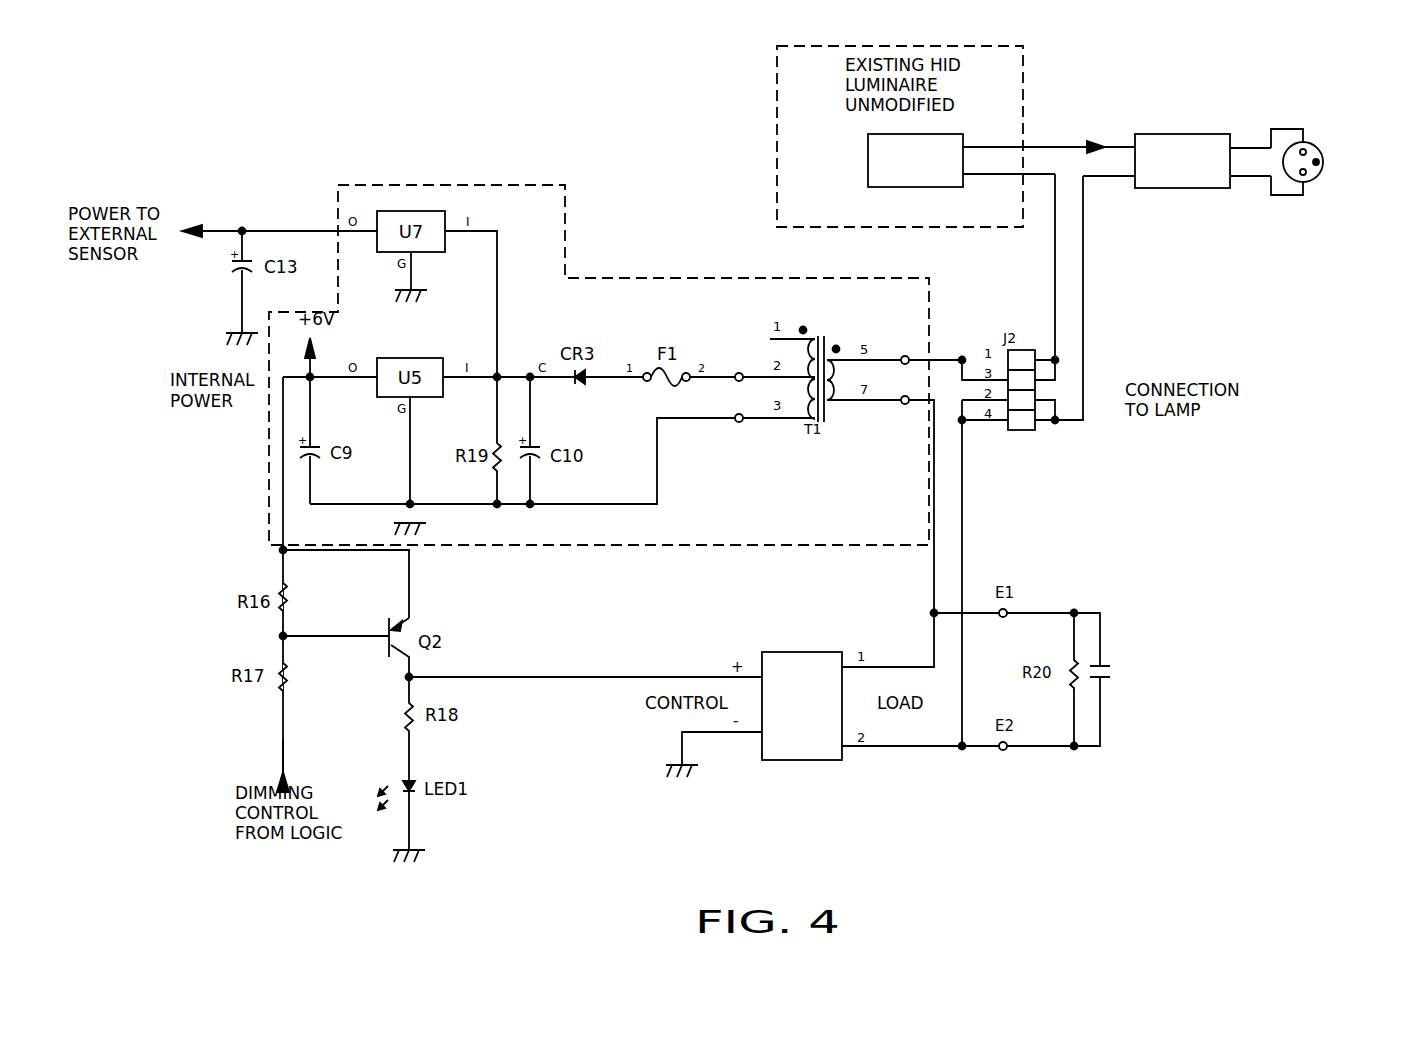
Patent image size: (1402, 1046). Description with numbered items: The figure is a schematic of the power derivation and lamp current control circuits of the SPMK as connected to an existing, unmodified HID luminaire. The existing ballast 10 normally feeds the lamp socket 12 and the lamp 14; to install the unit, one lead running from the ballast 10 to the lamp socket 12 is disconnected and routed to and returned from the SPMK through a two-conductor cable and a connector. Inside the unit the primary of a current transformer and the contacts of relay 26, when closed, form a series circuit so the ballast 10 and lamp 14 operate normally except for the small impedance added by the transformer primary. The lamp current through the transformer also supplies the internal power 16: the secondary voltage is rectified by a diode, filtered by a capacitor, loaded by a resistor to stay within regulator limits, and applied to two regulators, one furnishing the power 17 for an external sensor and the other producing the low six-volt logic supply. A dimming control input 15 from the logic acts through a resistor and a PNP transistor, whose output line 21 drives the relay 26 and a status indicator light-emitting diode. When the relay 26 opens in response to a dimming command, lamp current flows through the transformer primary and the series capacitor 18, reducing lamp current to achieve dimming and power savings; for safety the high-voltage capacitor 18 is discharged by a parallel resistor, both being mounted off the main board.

The ballast 10 is at (863, 154).
The lamp socket 12 is at (1185, 126).
The lamp 14 is at (1330, 161).
The decoder output 15 is at (269, 762).
The power 16 is at (397, 184).
The power to external sensor 17 is at (279, 215).
The capacitor 18 is at (1120, 669).
The control signal line 21 is at (585, 661).
The relay 26 is at (802, 768).